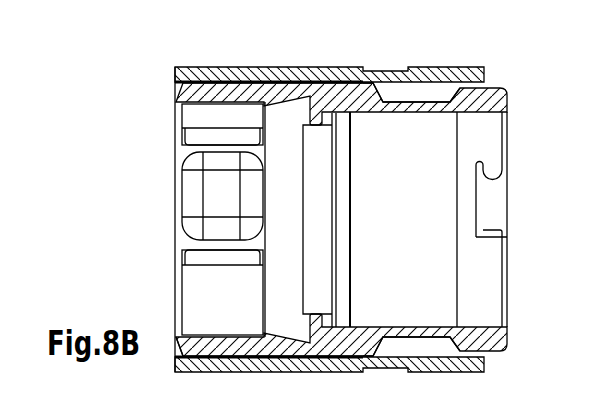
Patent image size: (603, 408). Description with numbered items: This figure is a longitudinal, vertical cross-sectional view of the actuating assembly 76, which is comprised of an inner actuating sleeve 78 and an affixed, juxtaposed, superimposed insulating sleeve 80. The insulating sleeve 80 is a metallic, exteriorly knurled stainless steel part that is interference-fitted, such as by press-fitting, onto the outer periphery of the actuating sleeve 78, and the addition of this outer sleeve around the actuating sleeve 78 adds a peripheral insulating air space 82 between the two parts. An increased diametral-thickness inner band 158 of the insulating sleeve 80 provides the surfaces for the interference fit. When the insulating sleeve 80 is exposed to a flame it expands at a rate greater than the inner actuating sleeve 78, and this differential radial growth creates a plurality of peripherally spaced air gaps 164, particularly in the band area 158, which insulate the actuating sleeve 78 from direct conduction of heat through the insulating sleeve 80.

The actuating assembly 76 is at (355, 214).
The actuating sleeve 78 is at (237, 348).
The insulating sleeve 80 is at (268, 74).
The insulating air space 82 is at (400, 95).
The inner band 158 is at (177, 357).
The air gaps 164 is at (222, 81).